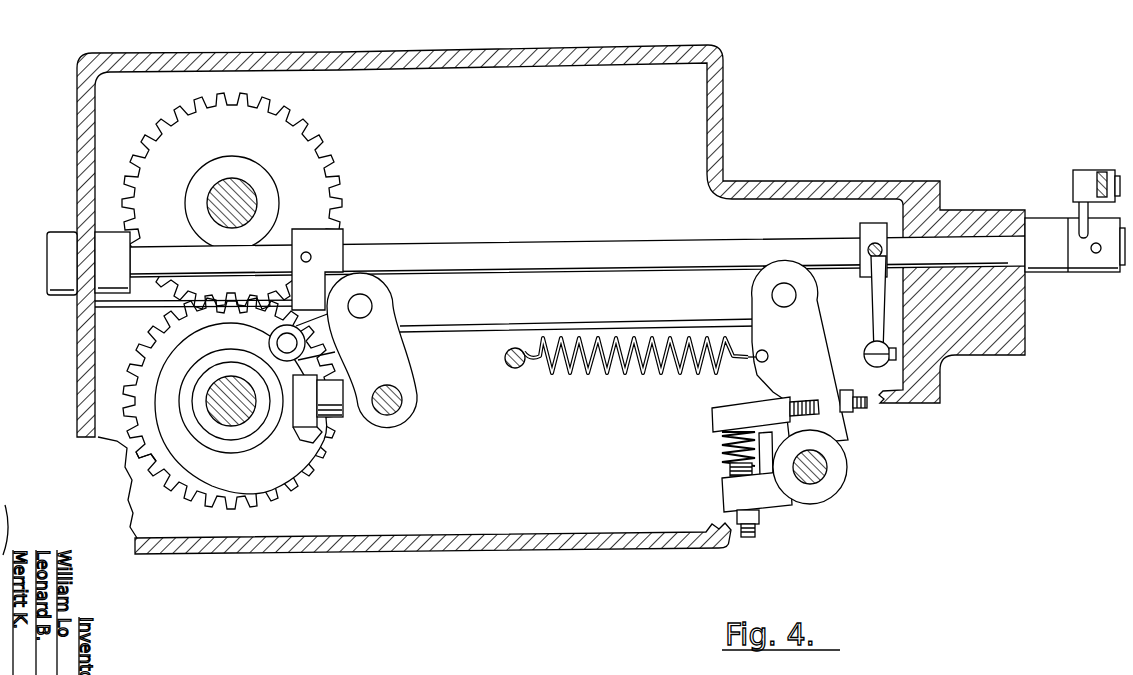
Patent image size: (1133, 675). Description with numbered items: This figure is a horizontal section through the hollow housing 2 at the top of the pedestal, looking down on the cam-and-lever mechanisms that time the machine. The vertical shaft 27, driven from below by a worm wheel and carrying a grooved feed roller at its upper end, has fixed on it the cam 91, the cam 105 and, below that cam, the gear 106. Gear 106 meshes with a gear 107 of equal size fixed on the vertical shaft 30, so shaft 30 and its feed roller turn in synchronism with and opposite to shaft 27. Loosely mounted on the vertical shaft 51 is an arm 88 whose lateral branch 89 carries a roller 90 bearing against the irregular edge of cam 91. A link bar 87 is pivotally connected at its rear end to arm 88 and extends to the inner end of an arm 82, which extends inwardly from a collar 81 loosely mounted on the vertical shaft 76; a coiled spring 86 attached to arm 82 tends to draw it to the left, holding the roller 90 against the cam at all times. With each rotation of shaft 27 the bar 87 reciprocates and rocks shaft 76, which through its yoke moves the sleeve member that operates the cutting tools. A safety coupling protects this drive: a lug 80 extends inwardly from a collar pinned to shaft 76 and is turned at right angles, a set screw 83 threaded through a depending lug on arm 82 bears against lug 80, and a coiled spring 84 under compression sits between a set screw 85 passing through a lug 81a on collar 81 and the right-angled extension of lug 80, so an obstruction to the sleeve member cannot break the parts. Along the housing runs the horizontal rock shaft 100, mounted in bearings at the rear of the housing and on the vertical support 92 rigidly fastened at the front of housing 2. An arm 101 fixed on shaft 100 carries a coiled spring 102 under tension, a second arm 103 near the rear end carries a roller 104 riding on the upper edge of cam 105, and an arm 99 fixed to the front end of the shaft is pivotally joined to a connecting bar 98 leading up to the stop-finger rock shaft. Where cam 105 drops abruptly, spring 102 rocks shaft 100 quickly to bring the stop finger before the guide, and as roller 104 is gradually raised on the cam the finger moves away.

The hollow housing 2 is at (473, 540).
The vertical shaft 27 is at (243, 417).
The vertical shaft 30 is at (243, 195).
The vertical shaft 51 is at (403, 400).
The vertical shaft 76 is at (830, 472).
The lug 80 is at (735, 410).
The collar 81 is at (835, 485).
The lug or projection 81a is at (770, 498).
The arm 82 is at (812, 347).
The set screw 83 is at (855, 412).
The coiled spring 84 is at (723, 440).
The set screw 85 is at (747, 535).
The coiled spring 86 is at (626, 372).
The link bar 87 is at (488, 317).
The arm 88 is at (375, 356).
The lateral branch 89 is at (310, 344).
The roller 90 is at (268, 337).
The cam 91 is at (287, 480).
The vertical support 92 is at (990, 352).
The connecting bar 98 is at (1100, 172).
The arm 99 is at (1087, 213).
The horizontal rock shaft 100 is at (512, 244).
The arm 101 is at (879, 305).
The coiled spring 102 is at (867, 360).
The second arm 103 is at (335, 272).
The roller 104 is at (328, 418).
The cam 105 is at (168, 388).
The gear 106 is at (168, 462).
The gear 107 is at (290, 146).